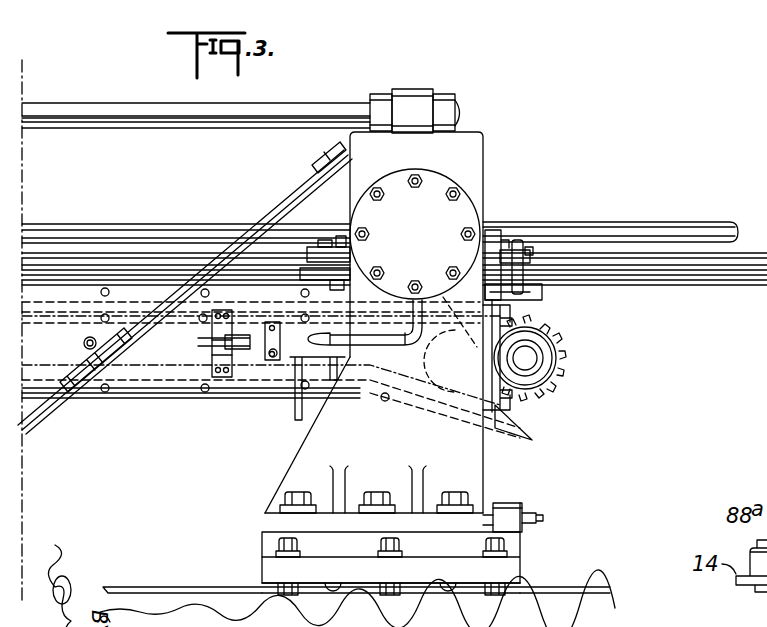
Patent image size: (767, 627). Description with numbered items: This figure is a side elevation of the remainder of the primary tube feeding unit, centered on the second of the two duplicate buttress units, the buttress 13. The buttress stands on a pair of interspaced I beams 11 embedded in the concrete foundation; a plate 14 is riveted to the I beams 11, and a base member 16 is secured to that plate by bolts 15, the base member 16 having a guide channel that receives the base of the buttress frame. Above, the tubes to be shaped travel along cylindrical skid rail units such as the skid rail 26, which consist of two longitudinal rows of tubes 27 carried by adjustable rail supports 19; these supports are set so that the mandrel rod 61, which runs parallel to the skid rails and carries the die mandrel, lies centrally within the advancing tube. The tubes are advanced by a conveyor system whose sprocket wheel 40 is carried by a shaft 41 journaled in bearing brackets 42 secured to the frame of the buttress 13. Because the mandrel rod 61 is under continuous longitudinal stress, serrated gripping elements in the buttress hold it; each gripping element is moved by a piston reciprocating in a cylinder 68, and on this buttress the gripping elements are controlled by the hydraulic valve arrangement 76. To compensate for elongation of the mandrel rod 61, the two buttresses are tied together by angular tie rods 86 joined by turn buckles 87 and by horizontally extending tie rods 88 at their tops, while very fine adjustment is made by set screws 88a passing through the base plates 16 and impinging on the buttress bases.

The tie rod 88 is at (128, 108).
The angular tie rod 86 is at (290, 210).
The turn buckle 87 is at (82, 390).
The mandrel rod 61 is at (590, 230).
The tube 27 is at (95, 268).
The skid rail unit 26 is at (47, 262).
The rail support 19 is at (502, 258).
The cylinder 68 is at (415, 234).
The hydraulic valve arrangement 76 is at (352, 360).
The sprocket wheel 40 is at (560, 390).
The shaft 41 is at (527, 358).
The bearing bracket 42 is at (508, 398).
The buttress unit 13 is at (374, 435).
The set screw 88a is at (530, 510).
The bolt 15 is at (522, 546).
The base member 16 is at (525, 568).
The plate 14 is at (268, 580).
The I beam 11 is at (162, 588).